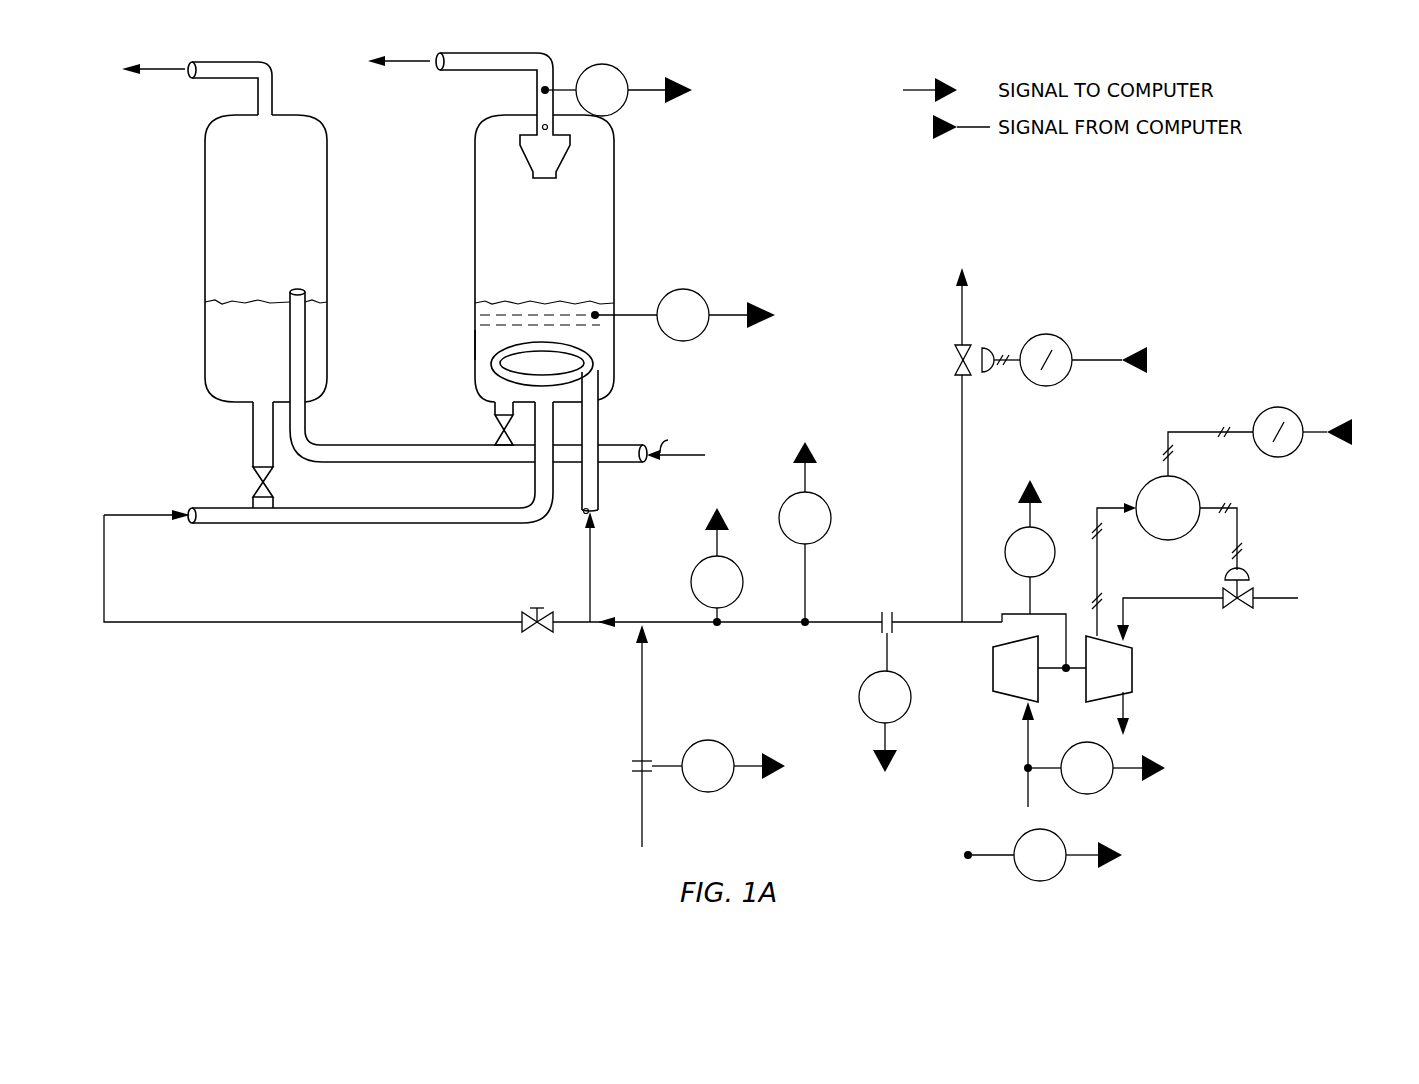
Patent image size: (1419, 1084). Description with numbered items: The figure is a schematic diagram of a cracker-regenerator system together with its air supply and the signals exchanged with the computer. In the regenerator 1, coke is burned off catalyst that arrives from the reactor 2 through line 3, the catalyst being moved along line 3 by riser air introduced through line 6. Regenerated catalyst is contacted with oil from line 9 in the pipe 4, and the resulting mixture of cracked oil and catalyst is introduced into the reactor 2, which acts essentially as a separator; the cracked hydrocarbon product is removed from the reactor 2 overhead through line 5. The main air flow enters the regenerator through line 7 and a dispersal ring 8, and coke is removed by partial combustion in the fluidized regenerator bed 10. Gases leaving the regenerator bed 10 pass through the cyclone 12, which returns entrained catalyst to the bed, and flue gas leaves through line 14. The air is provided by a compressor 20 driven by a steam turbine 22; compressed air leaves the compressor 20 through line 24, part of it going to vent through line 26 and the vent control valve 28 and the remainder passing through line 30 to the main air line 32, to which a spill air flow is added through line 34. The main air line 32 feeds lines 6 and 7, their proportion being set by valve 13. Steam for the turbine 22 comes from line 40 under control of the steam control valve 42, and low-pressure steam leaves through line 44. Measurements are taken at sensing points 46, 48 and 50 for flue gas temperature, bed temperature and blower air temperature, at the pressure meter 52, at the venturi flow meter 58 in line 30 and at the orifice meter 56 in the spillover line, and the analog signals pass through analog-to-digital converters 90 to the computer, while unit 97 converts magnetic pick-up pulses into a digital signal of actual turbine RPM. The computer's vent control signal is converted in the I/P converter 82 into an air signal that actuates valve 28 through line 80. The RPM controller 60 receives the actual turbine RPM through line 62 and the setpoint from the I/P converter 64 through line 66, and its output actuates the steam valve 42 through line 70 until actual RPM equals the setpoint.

The regenerator 1 is at (466, 303).
The reactor 2 is at (338, 242).
The line 3 is at (380, 508).
The pipe 4 is at (392, 446).
The vent pipe 5 is at (231, 62).
The line 6 is at (372, 621).
The line 7 is at (591, 569).
The dispersal ring 8 is at (600, 362).
The line 9 is at (613, 446).
The regenerator bed 10 is at (475, 347).
The cyclone 12 is at (524, 137).
The valve 13 is at (536, 633).
The line 14 is at (487, 54).
The compressor 20 is at (992, 668).
The steam turbine 22 is at (1133, 668).
The line 24 is at (998, 617).
The line 26 is at (960, 547).
The vent control valve 28 is at (955, 360).
The line 30 is at (916, 624).
The main air line 32 is at (610, 621).
The line 34 is at (641, 691).
The line 40 is at (1264, 600).
The steam control valve 42 is at (1260, 596).
The line 44 is at (1127, 713).
The temperature sensor 46 is at (541, 90).
The temperature sensor 48 is at (596, 311).
The temperature sensor 50 is at (806, 628).
The pressure meter 52 is at (718, 628).
The orifice meter 56 is at (632, 766).
The venturi flow meter 58 is at (889, 613).
The RPM controller 60 is at (1160, 477).
The line 62 is at (1099, 507).
The I/P converter 64 is at (1260, 412).
The line 66 is at (1180, 432).
The line 70 is at (1240, 527).
The line 80 is at (996, 356).
The I/P converter 82 is at (1047, 334).
The analog-to-digital converter 90 is at (610, 64).
The unit 97 is at (1014, 538).